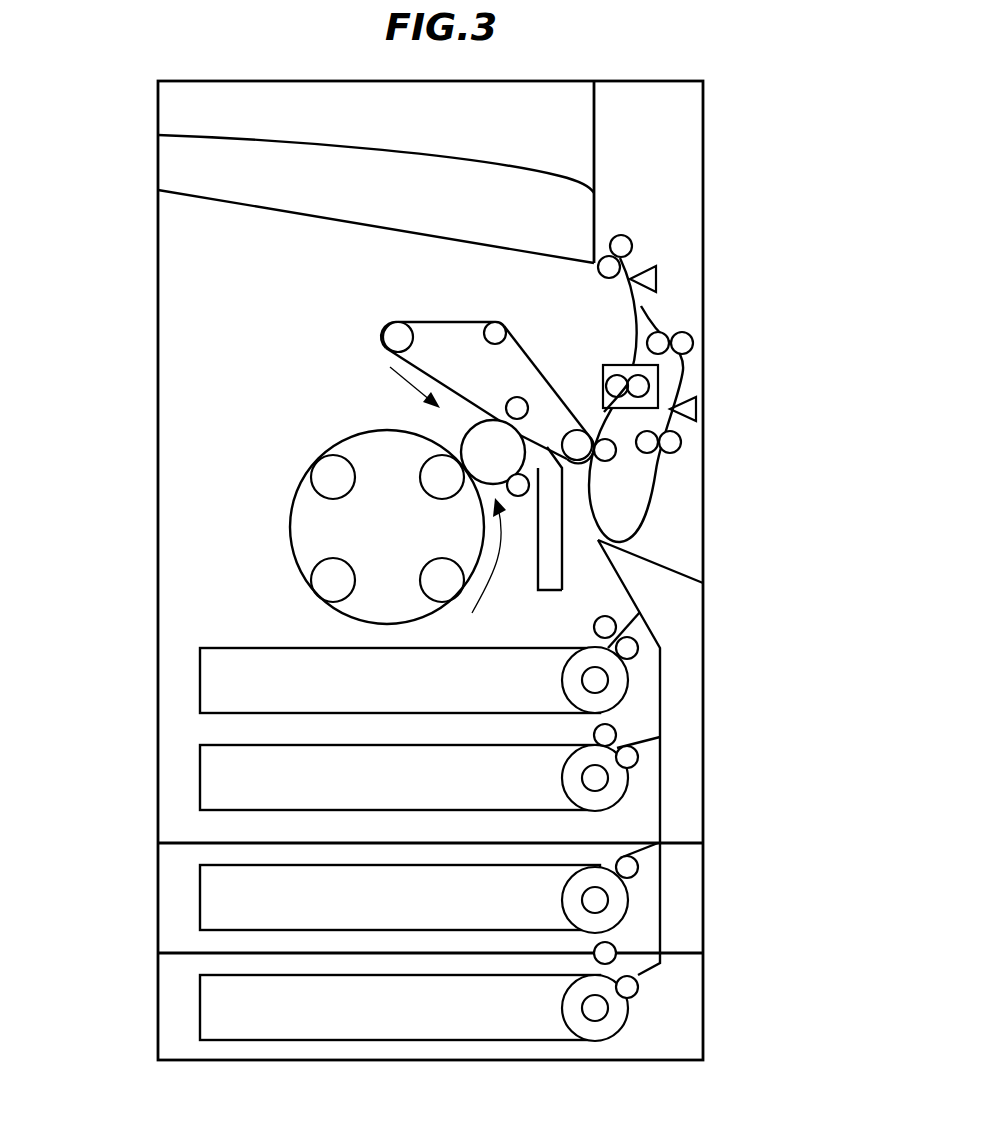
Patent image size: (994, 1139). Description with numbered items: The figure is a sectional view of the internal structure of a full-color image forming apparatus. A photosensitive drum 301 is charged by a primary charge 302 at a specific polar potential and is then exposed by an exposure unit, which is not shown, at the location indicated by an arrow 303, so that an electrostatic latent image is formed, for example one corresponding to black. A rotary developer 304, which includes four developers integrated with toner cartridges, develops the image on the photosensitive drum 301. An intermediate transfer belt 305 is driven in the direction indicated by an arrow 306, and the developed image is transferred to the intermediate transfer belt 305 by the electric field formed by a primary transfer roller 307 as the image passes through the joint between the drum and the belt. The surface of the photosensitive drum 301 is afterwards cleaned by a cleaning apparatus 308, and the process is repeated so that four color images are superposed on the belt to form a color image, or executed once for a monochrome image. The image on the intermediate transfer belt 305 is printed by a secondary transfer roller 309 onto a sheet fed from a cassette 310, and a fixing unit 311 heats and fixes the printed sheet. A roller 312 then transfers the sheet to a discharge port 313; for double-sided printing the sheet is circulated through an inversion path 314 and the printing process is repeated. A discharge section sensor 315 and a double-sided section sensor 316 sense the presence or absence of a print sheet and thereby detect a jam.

The photosensitive drum 301 is at (463, 440).
The primary charge 302 is at (521, 506).
The arrow 303 is at (479, 571).
The rotary developer 304 is at (292, 508).
The intermediate transfer belt 305 is at (387, 323).
The arrow 306 is at (387, 375).
The primary transfer roller 307 is at (510, 400).
The cleaning apparatus 308 is at (570, 488).
The secondary transfer roller 309 is at (645, 478).
The cassette 310 is at (535, 713).
The fixing unit 311 is at (620, 365).
The roller 312 is at (594, 245).
The discharge port 313 is at (158, 157).
The inversion path 314 is at (683, 367).
The discharge section sensor 315 is at (656, 279).
The double-sided section sensor 316 is at (696, 409).